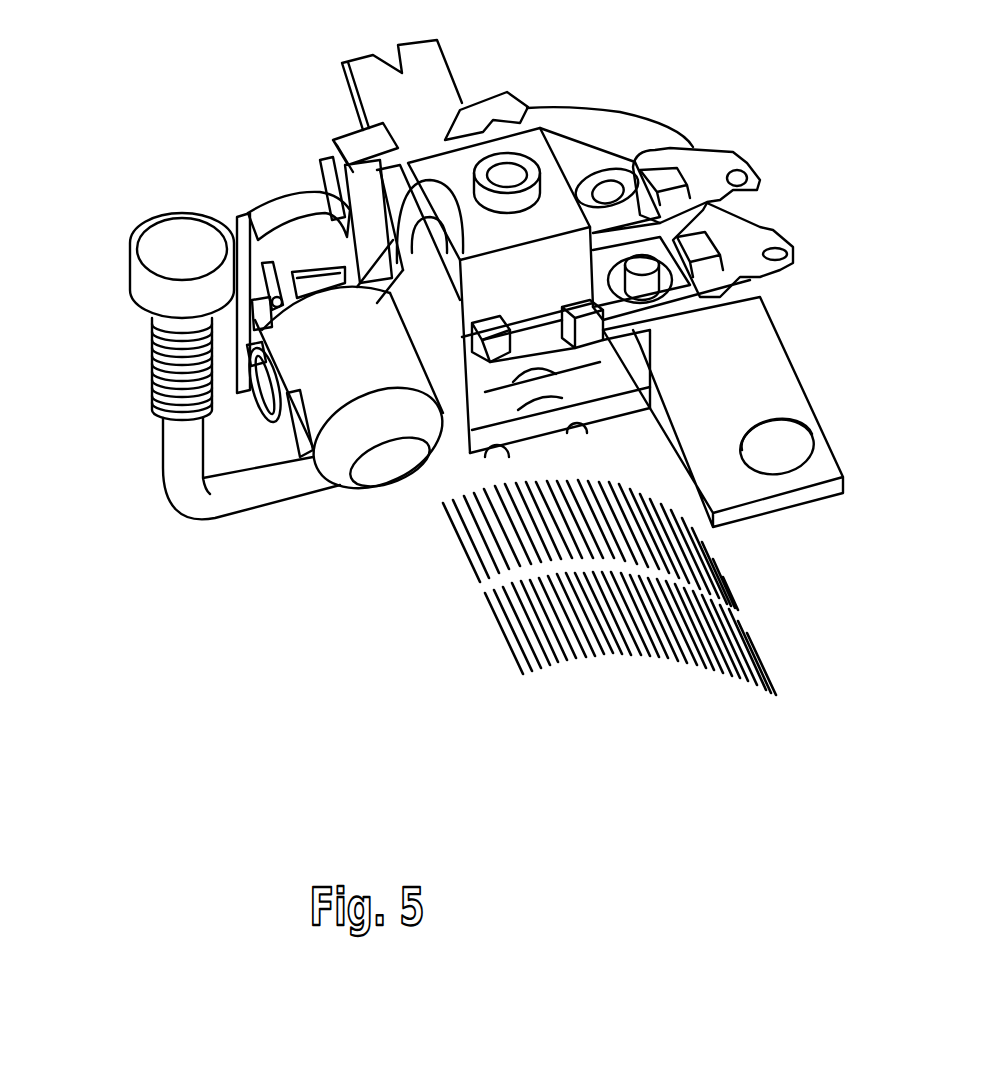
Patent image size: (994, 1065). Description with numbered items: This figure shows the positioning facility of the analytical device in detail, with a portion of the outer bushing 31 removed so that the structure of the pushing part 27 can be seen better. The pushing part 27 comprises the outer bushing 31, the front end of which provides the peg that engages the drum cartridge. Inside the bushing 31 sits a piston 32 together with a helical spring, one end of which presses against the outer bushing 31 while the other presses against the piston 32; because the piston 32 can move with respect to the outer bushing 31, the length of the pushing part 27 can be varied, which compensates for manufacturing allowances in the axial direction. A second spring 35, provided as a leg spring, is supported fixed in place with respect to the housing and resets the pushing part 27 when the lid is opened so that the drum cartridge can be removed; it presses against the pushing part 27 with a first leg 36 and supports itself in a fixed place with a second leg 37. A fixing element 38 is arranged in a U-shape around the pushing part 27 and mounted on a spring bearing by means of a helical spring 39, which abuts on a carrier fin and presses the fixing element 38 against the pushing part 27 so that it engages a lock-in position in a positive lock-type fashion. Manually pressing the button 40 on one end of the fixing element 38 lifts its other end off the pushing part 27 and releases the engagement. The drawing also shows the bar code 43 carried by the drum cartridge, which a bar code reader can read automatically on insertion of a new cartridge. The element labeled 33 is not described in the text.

The pushing part 27 is at (381, 346).
The outer bushing 31 is at (353, 387).
The piston 32 is at (393, 417).
The retaining saddle 33 is at (307, 240).
The second spring 35 is at (247, 423).
The first leg 36 is at (250, 337).
The second leg 37 is at (290, 423).
The fixing element 38 is at (163, 460).
The spring 39 is at (152, 340).
The button 40 is at (165, 238).
The bar code 43 is at (740, 640).